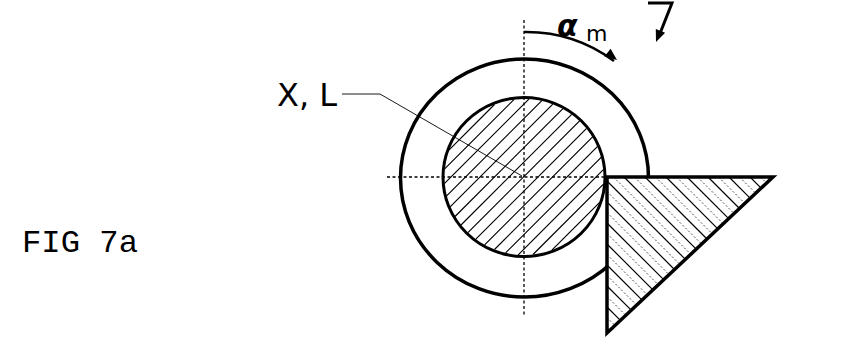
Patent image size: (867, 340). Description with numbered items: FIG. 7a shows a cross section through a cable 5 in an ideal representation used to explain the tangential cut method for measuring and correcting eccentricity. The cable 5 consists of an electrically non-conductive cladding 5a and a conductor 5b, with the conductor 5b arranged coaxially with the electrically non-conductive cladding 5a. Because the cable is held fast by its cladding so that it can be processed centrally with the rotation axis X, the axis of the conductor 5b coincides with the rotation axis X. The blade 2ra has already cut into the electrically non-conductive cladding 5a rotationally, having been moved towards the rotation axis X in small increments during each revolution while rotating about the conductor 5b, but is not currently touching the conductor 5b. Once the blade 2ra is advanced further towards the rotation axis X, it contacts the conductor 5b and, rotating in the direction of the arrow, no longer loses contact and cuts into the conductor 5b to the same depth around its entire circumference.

The cable 5 is at (672, 21).
The electrically non-conductive cladding 5a is at (612, 116).
The conductor 5b is at (597, 158).
The blade 2ra is at (698, 258).